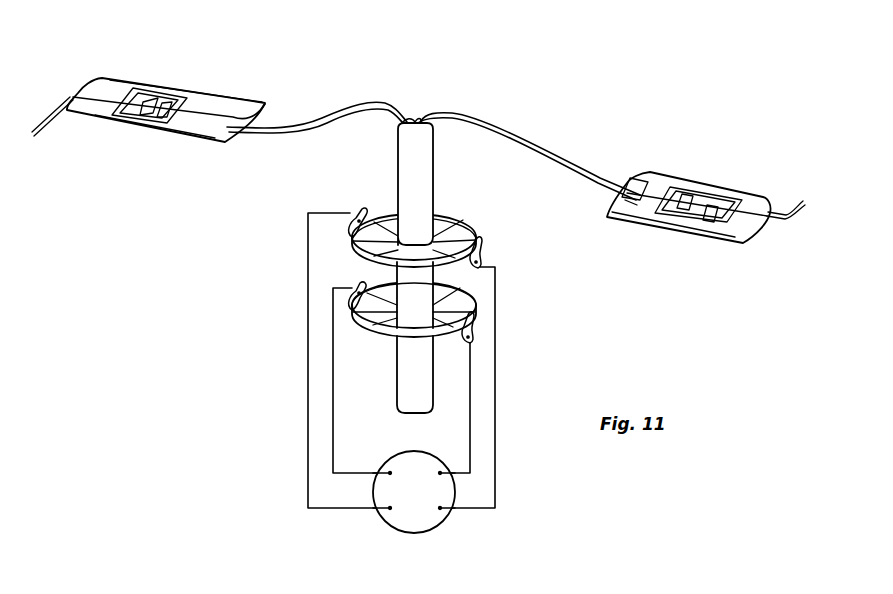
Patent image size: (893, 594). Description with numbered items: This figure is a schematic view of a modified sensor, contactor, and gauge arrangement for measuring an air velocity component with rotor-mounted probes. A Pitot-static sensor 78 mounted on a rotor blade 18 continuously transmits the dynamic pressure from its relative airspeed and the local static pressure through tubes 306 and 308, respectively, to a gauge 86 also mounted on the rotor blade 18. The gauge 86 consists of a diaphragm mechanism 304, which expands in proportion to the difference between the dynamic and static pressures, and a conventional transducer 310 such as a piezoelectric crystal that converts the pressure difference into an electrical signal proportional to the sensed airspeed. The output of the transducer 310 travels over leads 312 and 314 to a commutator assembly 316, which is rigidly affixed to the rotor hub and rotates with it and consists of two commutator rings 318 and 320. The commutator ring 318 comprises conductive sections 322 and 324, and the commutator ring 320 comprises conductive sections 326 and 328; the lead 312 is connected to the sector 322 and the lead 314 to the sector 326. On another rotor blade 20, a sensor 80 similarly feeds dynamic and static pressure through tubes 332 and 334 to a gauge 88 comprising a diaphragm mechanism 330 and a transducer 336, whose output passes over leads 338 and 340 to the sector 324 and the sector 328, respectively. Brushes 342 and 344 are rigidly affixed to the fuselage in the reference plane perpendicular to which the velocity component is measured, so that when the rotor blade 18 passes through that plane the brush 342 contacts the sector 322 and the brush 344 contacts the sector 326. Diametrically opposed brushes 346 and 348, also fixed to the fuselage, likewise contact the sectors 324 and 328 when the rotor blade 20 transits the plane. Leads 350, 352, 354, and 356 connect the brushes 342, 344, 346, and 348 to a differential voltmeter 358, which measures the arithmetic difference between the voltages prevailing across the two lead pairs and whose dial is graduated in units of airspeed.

The rotor blade 18 is at (105, 78).
The rotor blade 20 is at (745, 223).
The Pitot-static sensor 78 is at (45, 125).
The sensor 80 is at (792, 197).
The gauge 86 is at (177, 87).
The gauge 88 is at (690, 223).
The diaphragm mechanism 304 is at (153, 100).
The tube 306 is at (107, 97).
The tube 308 is at (100, 100).
The transducer 310 is at (158, 115).
The lead 312 is at (205, 127).
The lead 314 is at (217, 112).
The commutator assembly 316 is at (380, 281).
The commutator ring 318 is at (445, 218).
The commutator ring 320 is at (460, 290).
The conductive section 322 is at (375, 228).
The conductive section 324 is at (463, 223).
The conductive section 326 is at (353, 282).
The conductive section 328 is at (463, 307).
The diaphragm mechanism 330 is at (718, 200).
The tube 332 is at (718, 228).
The tube 334 is at (733, 202).
The transducer 336 is at (690, 196).
The lead 338 is at (657, 174).
The lead 340 is at (643, 200).
The brush 342 is at (350, 212).
The brush 344 is at (334, 288).
The brush 346 is at (483, 257).
The brush 348 is at (480, 327).
The lead 350 is at (305, 363).
The lead 352 is at (333, 370).
The lead 354 is at (493, 410).
The lead 356 is at (468, 410).
The differential voltmeter 358 is at (440, 530).